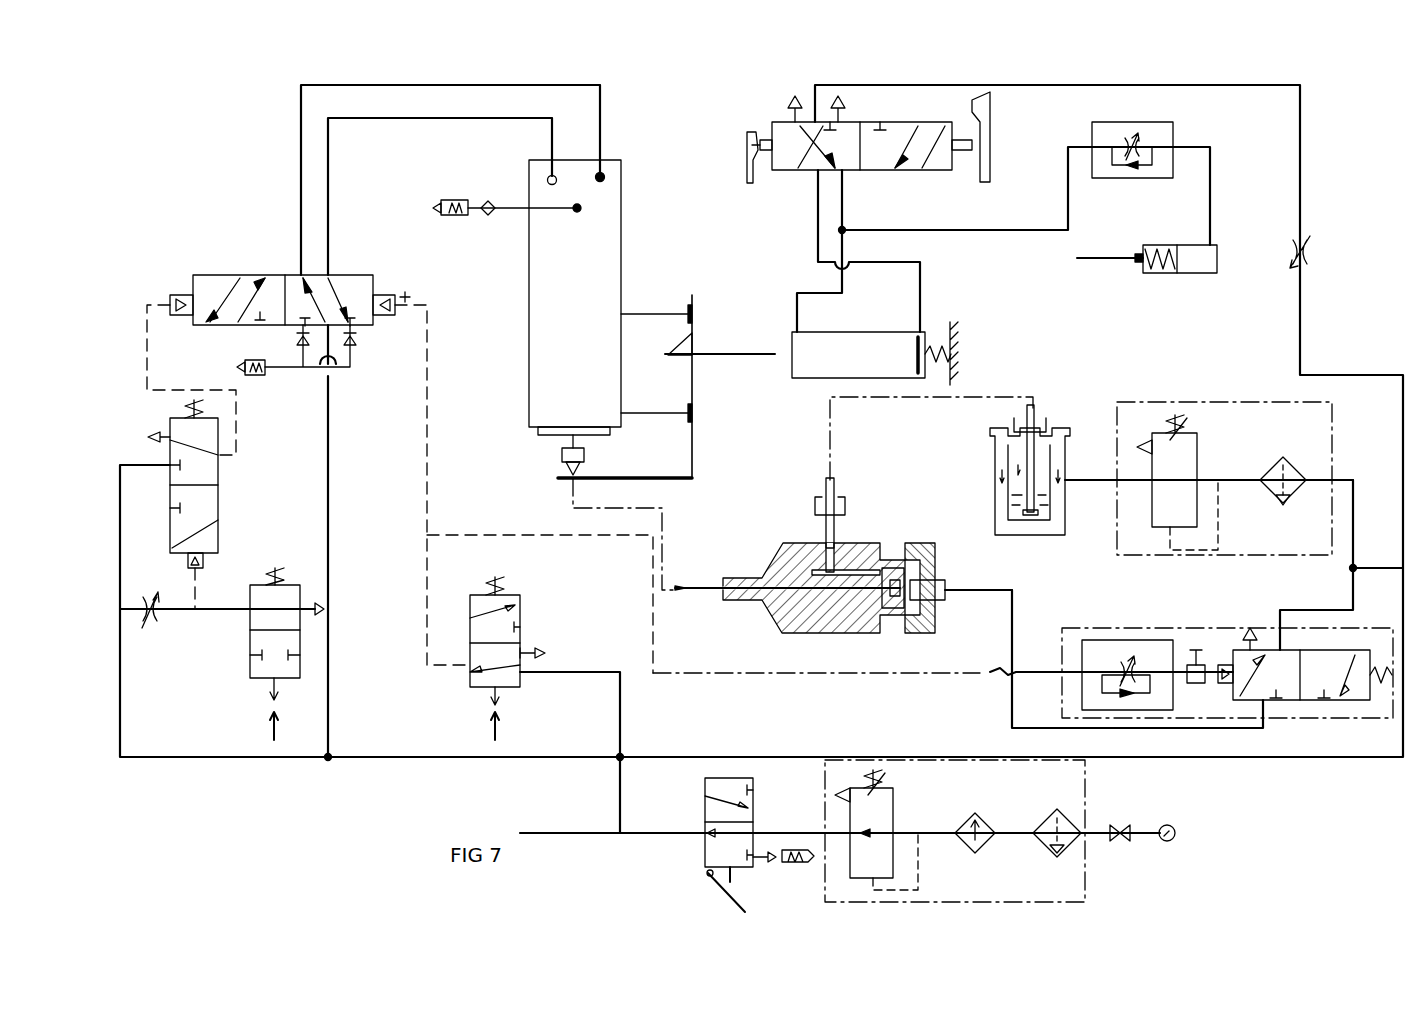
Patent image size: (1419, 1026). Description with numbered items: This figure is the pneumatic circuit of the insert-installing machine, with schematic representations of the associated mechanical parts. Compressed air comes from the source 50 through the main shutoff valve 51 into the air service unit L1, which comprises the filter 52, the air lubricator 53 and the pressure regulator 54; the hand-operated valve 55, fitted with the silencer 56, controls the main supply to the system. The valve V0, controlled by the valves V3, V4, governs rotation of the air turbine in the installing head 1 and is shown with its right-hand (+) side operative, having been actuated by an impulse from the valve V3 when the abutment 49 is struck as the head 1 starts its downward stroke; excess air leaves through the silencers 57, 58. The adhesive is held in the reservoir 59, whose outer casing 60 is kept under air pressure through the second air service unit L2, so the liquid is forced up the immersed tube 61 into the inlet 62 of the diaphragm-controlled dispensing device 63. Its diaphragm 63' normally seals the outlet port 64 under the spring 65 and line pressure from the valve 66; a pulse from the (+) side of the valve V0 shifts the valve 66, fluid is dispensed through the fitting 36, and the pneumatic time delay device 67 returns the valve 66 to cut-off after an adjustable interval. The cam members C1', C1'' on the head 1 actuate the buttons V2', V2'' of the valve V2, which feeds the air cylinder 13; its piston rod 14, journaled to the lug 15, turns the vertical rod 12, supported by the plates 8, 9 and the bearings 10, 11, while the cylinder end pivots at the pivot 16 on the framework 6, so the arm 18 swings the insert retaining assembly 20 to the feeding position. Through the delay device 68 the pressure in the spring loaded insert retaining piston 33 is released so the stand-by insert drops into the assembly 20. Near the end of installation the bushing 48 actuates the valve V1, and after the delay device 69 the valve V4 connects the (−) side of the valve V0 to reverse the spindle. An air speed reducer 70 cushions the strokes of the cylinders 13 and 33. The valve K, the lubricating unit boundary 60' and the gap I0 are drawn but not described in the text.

The installing head 1 is at (550, 378).
The framework 6 is at (540, 147).
The plate 8 is at (647, 313).
The plate 9 is at (632, 412).
The bearing 10 is at (697, 320).
The bearing 11 is at (697, 416).
The vertical rod 12 is at (695, 470).
The air cylinder 13 is at (800, 380).
The piston rod 14 is at (755, 360).
The lug 15 is at (672, 348).
The pivot 16 is at (940, 368).
The L-shaped arm member 18 is at (680, 483).
The insert retaining assembly 20 is at (586, 498).
The spring loaded insert retaining piston 33 is at (1197, 278).
The intermediate fitting 36 is at (618, 448).
The bushing 48 is at (287, 731).
The abutment 49 is at (500, 740).
The compressed air source 50 is at (1162, 845).
The main shutoff valve 51 is at (1117, 846).
The filter 52 is at (1048, 852).
The air lubricator 53 is at (968, 850).
The pressure regulator 54 is at (870, 868).
The hand-operated valve 55 is at (705, 848).
The silencer 56 is at (796, 868).
The silencer 57 is at (452, 218).
The silencer 58 is at (257, 378).
The reservoir 59 is at (1015, 470).
The outer casing 60 is at (1007, 481).
The lubricating unit 60' is at (1013, 370).
The immersed tube 61 is at (1050, 466).
The inlet 62 is at (835, 490).
The diaphragm-controlled dispensing device 63 is at (814, 610).
The diaphragm 63' is at (905, 610).
The outlet port 64 is at (716, 596).
The spring 65 is at (893, 566).
The valve 66 is at (1356, 712).
The pneumatic time delay device 67 is at (1118, 638).
The pneumatic delay device 68 is at (1165, 138).
The delay device 69 is at (157, 620).
The air speed reducer 70 is at (1292, 247).
The measuring gap I0 is at (624, 456).
The valve Vo V0 is at (290, 309).
The valve V1 is at (255, 672).
The valve V2 is at (862, 154).
The button V2' is at (754, 120).
The button V2'' is at (956, 120).
The valve V3 is at (522, 630).
The valve V4 is at (205, 510).
The valve K is at (715, 845).
The air service unit L1 is at (984, 788).
The second air service unit L2 is at (1235, 482).
The cam member C1' is at (770, 181).
The cam member C1'' is at (1001, 158).